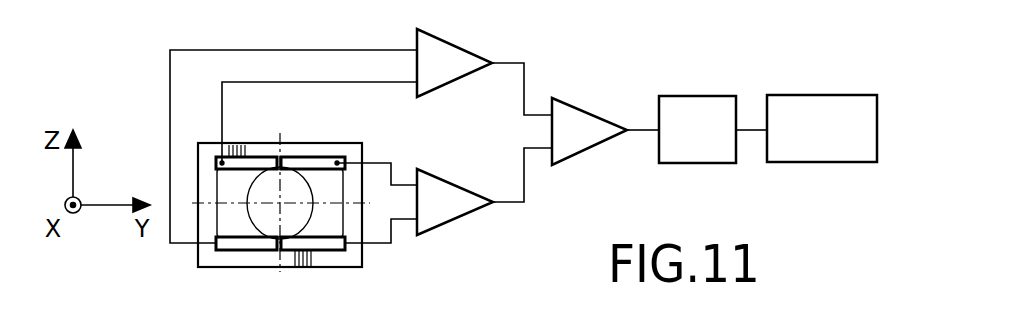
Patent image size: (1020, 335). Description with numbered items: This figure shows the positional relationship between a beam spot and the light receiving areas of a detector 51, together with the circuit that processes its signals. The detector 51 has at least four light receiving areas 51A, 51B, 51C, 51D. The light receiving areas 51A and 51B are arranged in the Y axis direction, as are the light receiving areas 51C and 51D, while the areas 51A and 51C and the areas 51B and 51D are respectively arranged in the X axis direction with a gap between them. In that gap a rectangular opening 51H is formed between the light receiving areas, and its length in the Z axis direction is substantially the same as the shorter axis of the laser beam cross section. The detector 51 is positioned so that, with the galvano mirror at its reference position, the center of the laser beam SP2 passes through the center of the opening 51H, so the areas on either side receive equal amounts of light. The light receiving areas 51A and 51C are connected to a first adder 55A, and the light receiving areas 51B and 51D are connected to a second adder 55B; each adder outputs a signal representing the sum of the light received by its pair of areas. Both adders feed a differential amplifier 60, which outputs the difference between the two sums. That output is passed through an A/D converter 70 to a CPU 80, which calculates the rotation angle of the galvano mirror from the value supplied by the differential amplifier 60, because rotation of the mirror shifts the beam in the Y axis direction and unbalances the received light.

The detector 51 is at (363, 149).
The light receiving area 51A is at (258, 154).
The light receiving area 51B is at (308, 155).
The light receiving area 51C is at (220, 253).
The light receiving area 51D is at (348, 266).
The rectangular opening 51H is at (318, 228).
The laser beam SP2 is at (246, 222).
The first adder 55A is at (467, 45).
The second adder 55B is at (467, 185).
The differential amplifier 60 is at (582, 108).
The A/D converter 70 is at (703, 96).
The CPU 80 is at (837, 95).